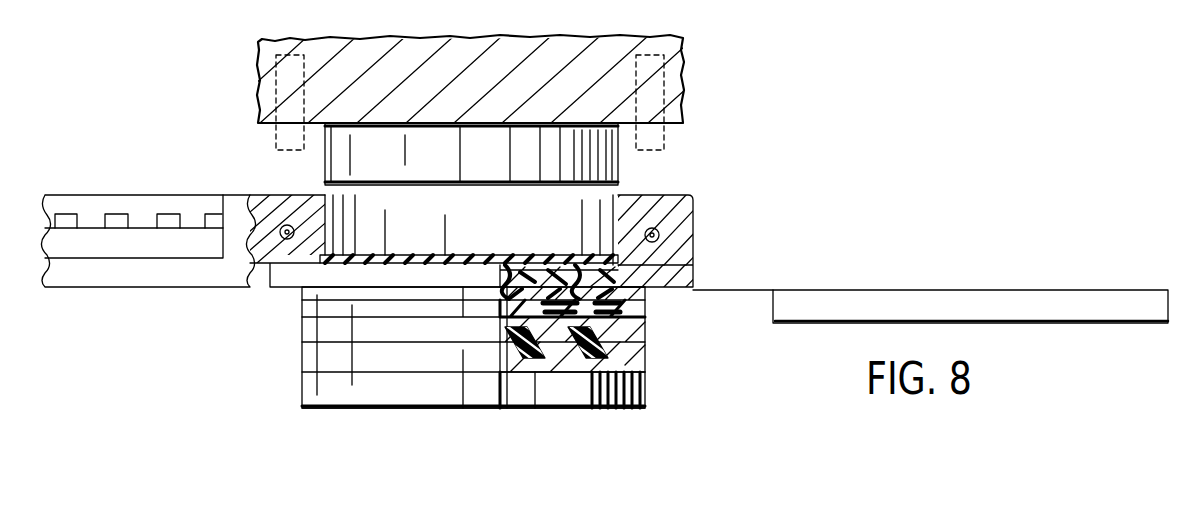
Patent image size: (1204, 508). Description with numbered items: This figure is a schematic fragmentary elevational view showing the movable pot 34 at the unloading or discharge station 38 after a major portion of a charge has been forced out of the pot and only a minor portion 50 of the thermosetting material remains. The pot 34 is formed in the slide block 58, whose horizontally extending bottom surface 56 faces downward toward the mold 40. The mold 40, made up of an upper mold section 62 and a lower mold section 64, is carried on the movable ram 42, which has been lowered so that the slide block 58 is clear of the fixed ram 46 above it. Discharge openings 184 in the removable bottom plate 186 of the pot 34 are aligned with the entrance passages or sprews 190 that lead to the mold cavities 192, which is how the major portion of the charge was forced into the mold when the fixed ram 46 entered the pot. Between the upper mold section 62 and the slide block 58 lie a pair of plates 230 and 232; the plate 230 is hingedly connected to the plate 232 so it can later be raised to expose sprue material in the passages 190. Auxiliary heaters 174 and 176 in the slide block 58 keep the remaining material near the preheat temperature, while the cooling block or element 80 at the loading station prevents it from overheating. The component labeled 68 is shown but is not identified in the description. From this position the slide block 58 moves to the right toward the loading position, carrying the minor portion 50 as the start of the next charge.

The unloading or discharge station 38 is at (727, 78).
The fixed ram 46 is at (404, 151).
The bottom surface 56 is at (76, 288).
The ribbon guide tray 68 is at (90, 188).
The slide block 58 is at (148, 176).
The movable pot 34 is at (625, 250).
The auxiliary heater 176 is at (302, 222).
The auxiliary heater 174 is at (660, 233).
The minor portion 50 is at (422, 254).
The discharge openings 184 is at (522, 262).
The bottom plate 186 is at (598, 280).
The mold 40 is at (298, 335).
The movable ram 42 is at (298, 402).
The plate 230 is at (651, 295).
The entrance passages or sprews 190 is at (640, 312).
The plate 232 is at (647, 332).
The upper mold section 62 is at (655, 350).
The lower mold section 64 is at (655, 376).
The mold cavities 192 is at (557, 390).
The cooling block or element 80 is at (972, 302).